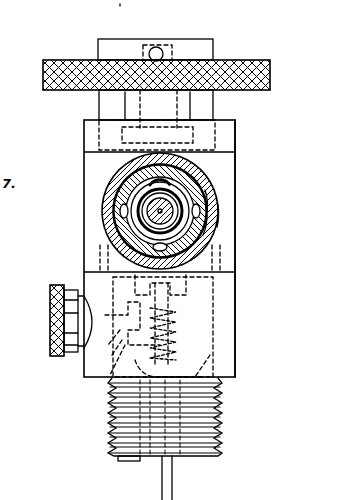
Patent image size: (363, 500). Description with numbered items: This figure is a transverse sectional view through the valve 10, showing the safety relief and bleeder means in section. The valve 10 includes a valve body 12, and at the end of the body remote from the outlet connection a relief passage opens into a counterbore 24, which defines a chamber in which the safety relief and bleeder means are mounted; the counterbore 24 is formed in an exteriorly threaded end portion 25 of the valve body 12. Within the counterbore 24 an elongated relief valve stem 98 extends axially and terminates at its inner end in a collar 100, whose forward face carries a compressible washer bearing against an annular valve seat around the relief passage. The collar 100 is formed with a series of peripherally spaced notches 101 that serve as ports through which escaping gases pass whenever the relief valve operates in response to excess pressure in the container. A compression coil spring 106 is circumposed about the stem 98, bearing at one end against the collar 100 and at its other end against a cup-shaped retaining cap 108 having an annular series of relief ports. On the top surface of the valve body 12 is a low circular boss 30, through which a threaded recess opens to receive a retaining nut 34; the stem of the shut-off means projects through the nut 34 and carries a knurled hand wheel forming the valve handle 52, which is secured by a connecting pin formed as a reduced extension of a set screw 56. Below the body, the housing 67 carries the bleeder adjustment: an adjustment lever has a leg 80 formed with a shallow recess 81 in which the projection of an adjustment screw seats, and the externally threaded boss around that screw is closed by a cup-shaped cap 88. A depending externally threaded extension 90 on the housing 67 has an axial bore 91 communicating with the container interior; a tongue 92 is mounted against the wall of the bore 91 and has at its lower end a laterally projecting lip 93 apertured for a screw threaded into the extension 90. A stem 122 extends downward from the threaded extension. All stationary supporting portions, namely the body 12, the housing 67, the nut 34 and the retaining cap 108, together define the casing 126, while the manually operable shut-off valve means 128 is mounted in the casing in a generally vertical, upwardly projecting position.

The valve 10 is at (248, 128).
The valve body 12 is at (236, 178).
The counterbore 24 is at (214, 232).
The exteriorly threaded end portion 25 is at (212, 205).
The circular boss 30 is at (84, 128).
The retaining nut 34 is at (213, 103).
The valve handle 52 is at (238, 58).
The set screw 56 is at (152, 60).
The housing 67 is at (235, 331).
The leg 80 is at (85, 360).
The shallow recess 81 is at (84, 358).
The cup-shaped cap 88 is at (50, 330).
The externally threaded extension 90 is at (112, 413).
The axial bore 91 is at (126, 3).
The tongue 92 is at (118, 437).
The lip 93 is at (130, 461).
The relief valve stem 98 is at (122, 218).
The collar 100 is at (112, 244).
The notches 101 is at (152, 180).
The spring 106 is at (140, 214).
The retaining cap 108 is at (219, 218).
The stem 122 is at (172, 481).
The casing 126 is at (246, 267).
The shut-off valve means 128 is at (212, 39).